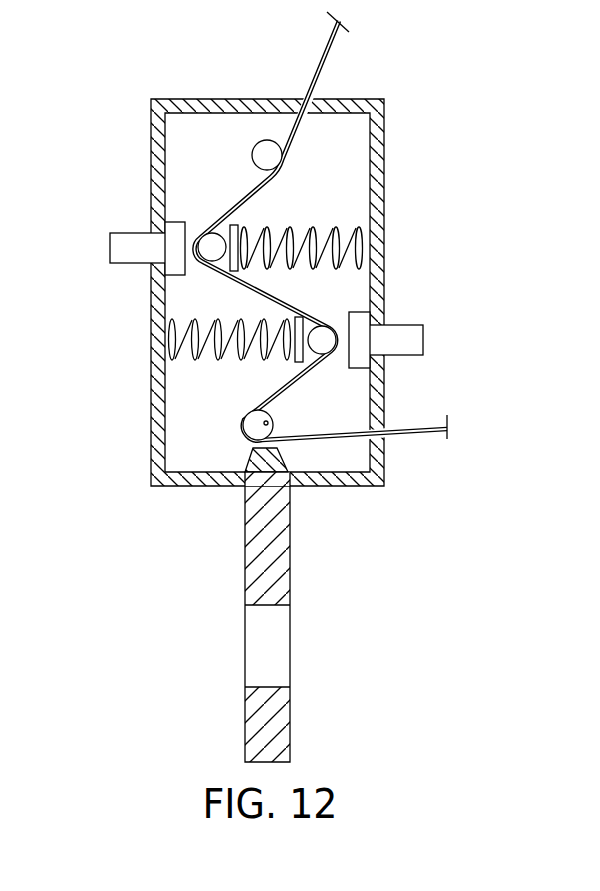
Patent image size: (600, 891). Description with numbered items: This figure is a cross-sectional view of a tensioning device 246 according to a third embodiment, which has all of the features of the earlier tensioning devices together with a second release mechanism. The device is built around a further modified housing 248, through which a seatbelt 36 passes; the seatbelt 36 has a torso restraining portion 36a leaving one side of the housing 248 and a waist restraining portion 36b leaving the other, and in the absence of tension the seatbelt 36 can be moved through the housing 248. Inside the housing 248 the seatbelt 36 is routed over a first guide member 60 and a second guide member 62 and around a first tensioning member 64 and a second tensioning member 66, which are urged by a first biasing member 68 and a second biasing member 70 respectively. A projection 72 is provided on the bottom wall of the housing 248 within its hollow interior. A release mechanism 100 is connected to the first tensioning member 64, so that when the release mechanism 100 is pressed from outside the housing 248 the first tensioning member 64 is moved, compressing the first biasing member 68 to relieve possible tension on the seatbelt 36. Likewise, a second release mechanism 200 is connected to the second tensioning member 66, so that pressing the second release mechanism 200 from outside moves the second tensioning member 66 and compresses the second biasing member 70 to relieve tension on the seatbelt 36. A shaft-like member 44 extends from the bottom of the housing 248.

The tensioning device 246 is at (120, 121).
The housing 248 is at (385, 131).
The seatbelt 36 is at (328, 69).
The torso restraining portion 36a is at (417, 427).
The waist restraining portion 36b is at (325, 44).
The second guide member 62 is at (265, 156).
The second tensioning member 66 is at (212, 247).
The first tensioning member 64 is at (322, 342).
The first guide member 60 is at (256, 425).
The second biasing member 70 is at (304, 226).
The first biasing member 68 is at (228, 362).
The second release mechanism 200 is at (128, 250).
The release mechanism 100 is at (405, 338).
The projection 72 is at (285, 462).
The shaft 44 is at (267, 545).